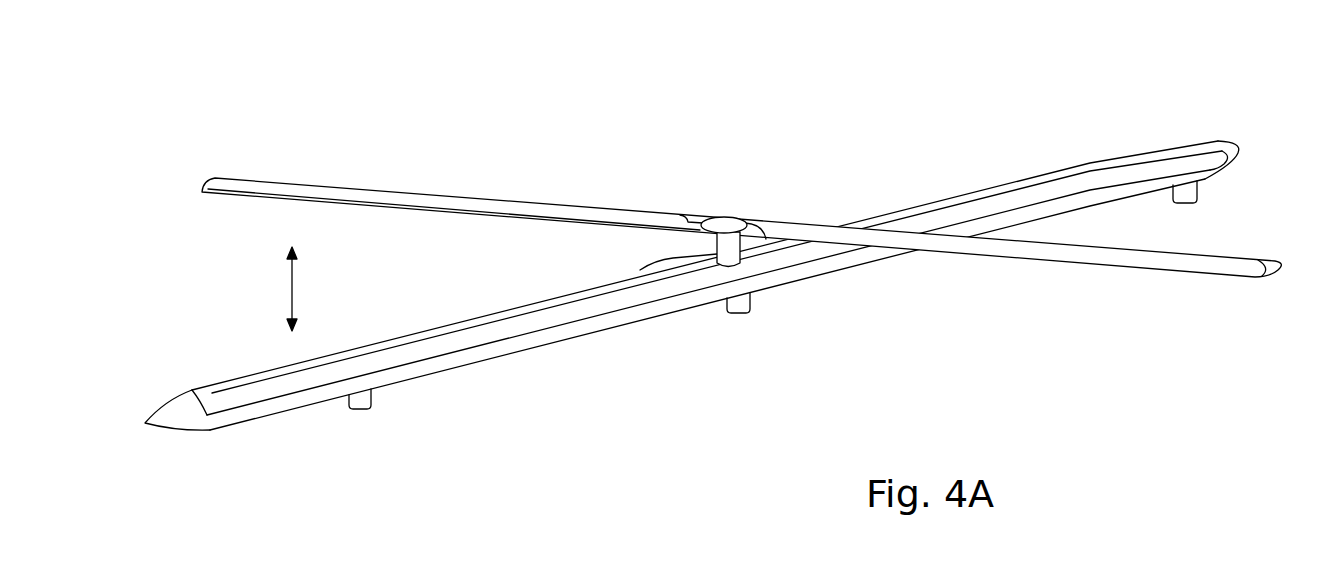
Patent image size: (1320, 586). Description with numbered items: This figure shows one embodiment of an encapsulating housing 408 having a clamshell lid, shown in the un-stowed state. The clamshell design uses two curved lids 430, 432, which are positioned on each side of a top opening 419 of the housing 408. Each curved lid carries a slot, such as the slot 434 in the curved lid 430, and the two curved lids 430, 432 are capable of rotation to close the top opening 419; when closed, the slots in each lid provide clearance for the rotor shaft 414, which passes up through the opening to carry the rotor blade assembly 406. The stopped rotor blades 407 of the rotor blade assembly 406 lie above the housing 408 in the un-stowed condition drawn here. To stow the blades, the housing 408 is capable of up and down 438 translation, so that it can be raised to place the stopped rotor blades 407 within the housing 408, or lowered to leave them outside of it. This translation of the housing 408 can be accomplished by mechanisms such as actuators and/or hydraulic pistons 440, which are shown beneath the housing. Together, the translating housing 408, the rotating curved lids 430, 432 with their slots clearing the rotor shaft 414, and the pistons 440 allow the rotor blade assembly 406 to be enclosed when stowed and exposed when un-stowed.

The housing 408 is at (917, 71).
The rotor blade assembly 406 is at (724, 215).
The rotor shaft 414 is at (716, 239).
The slot 434 is at (640, 270).
The curved lid 430 is at (704, 307).
The curved lid 432 is at (508, 331).
The top opening 419 is at (445, 342).
The up and down translation 438 is at (292, 289).
The hydraulic pistons 440 is at (362, 409).
The rotor blades 407 is at (1222, 280).